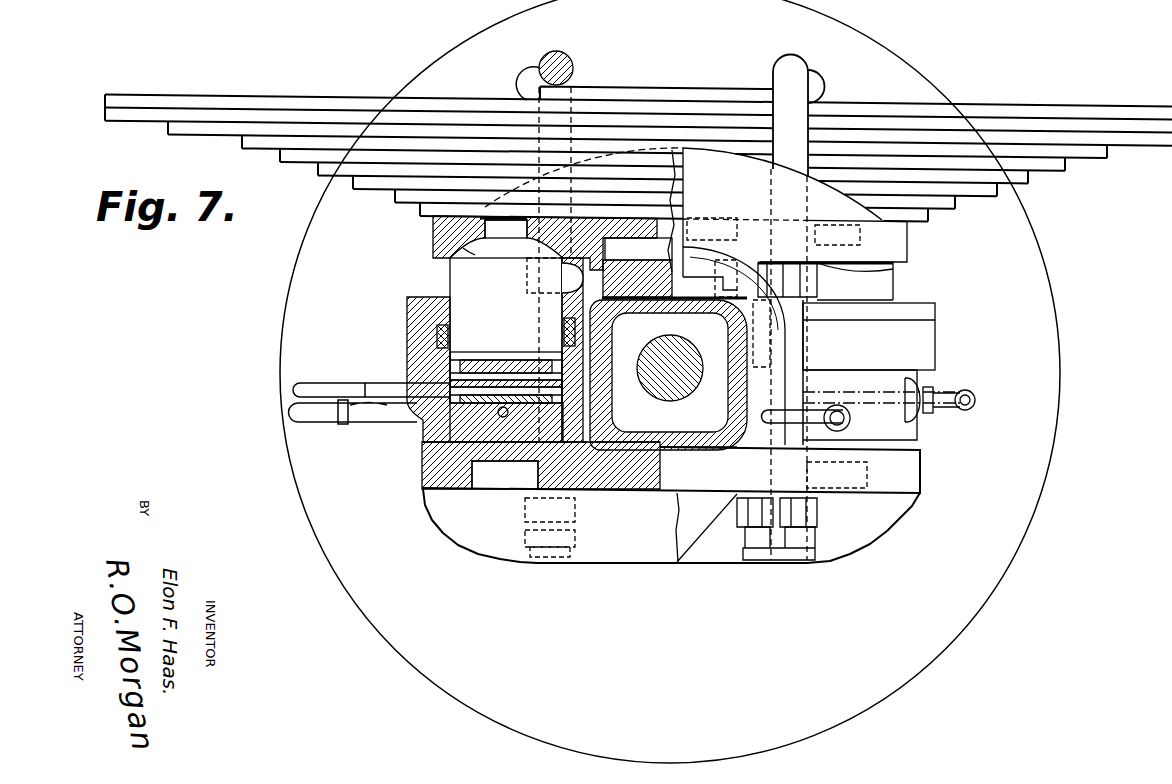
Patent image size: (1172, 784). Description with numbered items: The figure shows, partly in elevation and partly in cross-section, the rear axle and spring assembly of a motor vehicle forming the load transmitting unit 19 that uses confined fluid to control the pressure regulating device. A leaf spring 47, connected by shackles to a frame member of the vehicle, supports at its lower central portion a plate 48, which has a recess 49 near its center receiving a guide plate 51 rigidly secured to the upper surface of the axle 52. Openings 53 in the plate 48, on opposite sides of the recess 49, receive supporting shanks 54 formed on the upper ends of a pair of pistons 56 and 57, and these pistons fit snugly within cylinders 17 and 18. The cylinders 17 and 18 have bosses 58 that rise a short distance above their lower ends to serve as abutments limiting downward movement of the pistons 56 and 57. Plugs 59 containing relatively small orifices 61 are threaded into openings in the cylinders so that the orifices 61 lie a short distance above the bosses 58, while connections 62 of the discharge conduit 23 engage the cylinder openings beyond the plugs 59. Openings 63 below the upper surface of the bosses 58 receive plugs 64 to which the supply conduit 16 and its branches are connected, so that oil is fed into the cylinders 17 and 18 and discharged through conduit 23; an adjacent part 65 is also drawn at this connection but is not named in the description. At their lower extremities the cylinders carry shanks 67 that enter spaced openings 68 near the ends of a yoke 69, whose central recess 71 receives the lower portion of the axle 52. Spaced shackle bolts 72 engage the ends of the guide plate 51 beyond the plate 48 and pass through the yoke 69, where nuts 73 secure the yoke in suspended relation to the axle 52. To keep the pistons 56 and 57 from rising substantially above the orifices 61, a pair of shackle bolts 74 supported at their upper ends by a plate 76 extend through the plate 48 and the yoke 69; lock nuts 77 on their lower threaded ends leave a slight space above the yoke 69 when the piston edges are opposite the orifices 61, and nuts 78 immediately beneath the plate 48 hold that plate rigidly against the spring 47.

The spring 47 is at (1105, 123).
The load transmitting unit 19 is at (719, 82).
The shackle bolts 74 is at (574, 60).
The plate 76 is at (835, 91).
The plate 48 is at (433, 236).
The piston 57 is at (457, 288).
The openings 53 is at (463, 248).
The supporting shanks 54 is at (503, 240).
The cylinder 18 is at (407, 318).
The connections 62 is at (437, 334).
The conduit 23 is at (370, 383).
The conduit 16 is at (372, 424).
The orifices 61 is at (453, 362).
The plugs 59 is at (470, 400).
The bosses 58 is at (500, 400).
The openings 63 is at (526, 395).
The recess 49 is at (606, 256).
The guide plate 51 is at (643, 276).
The shackle bolts 72 is at (700, 255).
The nuts 78 is at (612, 316).
The piston 56 is at (885, 286).
The cylinder 17 is at (930, 341).
The pin 65 is at (810, 410).
The plugs 64 is at (838, 408).
The axle 52 is at (675, 455).
The recess 71 is at (712, 455).
The openings 68 is at (465, 410).
The shanks 67 is at (503, 470).
The lock nuts 77 is at (527, 540).
The nuts 73 is at (753, 528).
The yoke 69 is at (718, 550).